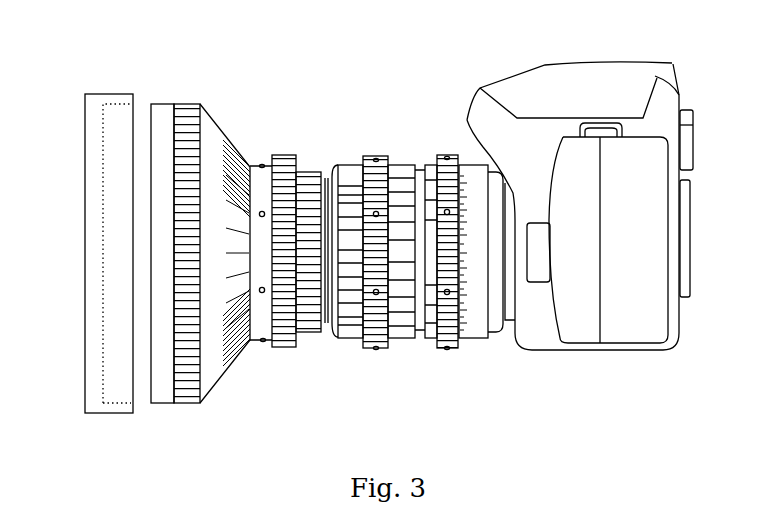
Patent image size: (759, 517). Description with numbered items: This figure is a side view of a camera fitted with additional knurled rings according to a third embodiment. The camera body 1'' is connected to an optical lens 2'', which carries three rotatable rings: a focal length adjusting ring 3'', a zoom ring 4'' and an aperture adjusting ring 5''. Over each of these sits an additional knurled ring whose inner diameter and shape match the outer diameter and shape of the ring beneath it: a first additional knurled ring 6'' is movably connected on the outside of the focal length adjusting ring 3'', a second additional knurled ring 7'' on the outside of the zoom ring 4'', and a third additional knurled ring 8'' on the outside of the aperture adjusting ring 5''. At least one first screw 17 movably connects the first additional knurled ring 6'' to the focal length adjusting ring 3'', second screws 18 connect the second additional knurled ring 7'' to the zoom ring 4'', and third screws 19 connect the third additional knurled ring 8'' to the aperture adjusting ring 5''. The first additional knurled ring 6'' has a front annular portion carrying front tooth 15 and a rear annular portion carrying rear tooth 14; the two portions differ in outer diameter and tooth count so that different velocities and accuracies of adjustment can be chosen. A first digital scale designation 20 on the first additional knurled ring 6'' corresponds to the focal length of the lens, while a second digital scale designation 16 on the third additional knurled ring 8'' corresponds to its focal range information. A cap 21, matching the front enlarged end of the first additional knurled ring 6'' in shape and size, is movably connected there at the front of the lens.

The camera body 1'' is at (592, 231).
The optical lens 2'' is at (208, 214).
The focal length adjusting ring 3'' is at (336, 179).
The zoom ring 4'' is at (428, 182).
The aperture adjusting ring 5'' is at (486, 293).
The first additional knurled ring 6'' is at (267, 184).
The second additional knurled ring 7'' is at (393, 187).
The third additional knurled ring 8'' is at (477, 187).
The rear tooth 14 is at (283, 152).
The front tooth 15 is at (177, 93).
The second digital scale designation 16 is at (486, 291).
The first screws 17 is at (262, 176).
The second screws 18 is at (373, 170).
The third screws 19 is at (445, 170).
The first digital scale designation 20 is at (214, 342).
The cap 21 is at (82, 354).